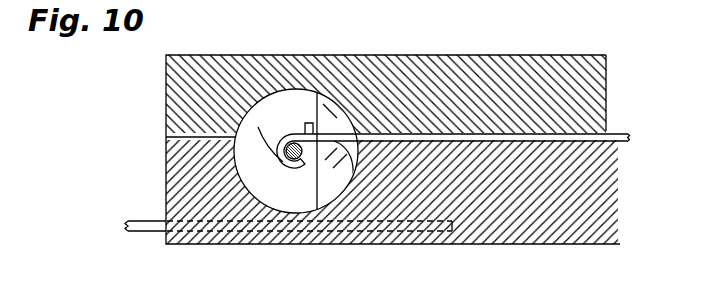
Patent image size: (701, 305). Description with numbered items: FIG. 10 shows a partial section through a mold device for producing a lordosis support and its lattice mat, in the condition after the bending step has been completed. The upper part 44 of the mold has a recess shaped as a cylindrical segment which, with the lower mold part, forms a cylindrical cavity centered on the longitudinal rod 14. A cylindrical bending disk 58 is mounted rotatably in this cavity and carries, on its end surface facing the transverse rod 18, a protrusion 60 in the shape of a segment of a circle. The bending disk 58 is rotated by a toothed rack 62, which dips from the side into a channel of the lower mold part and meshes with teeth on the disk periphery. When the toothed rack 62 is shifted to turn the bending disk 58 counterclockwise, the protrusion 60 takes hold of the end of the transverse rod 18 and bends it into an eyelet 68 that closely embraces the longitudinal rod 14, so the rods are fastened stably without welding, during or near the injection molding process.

The upper part of the mold 44 is at (416, 54).
The transverse rod 18 is at (502, 130).
The longitudinal rod 14 is at (290, 159).
The bending disk 58 is at (295, 98).
The protrusion 60 is at (297, 244).
The toothed rack 62 is at (147, 222).
The eyelet 68 is at (258, 127).